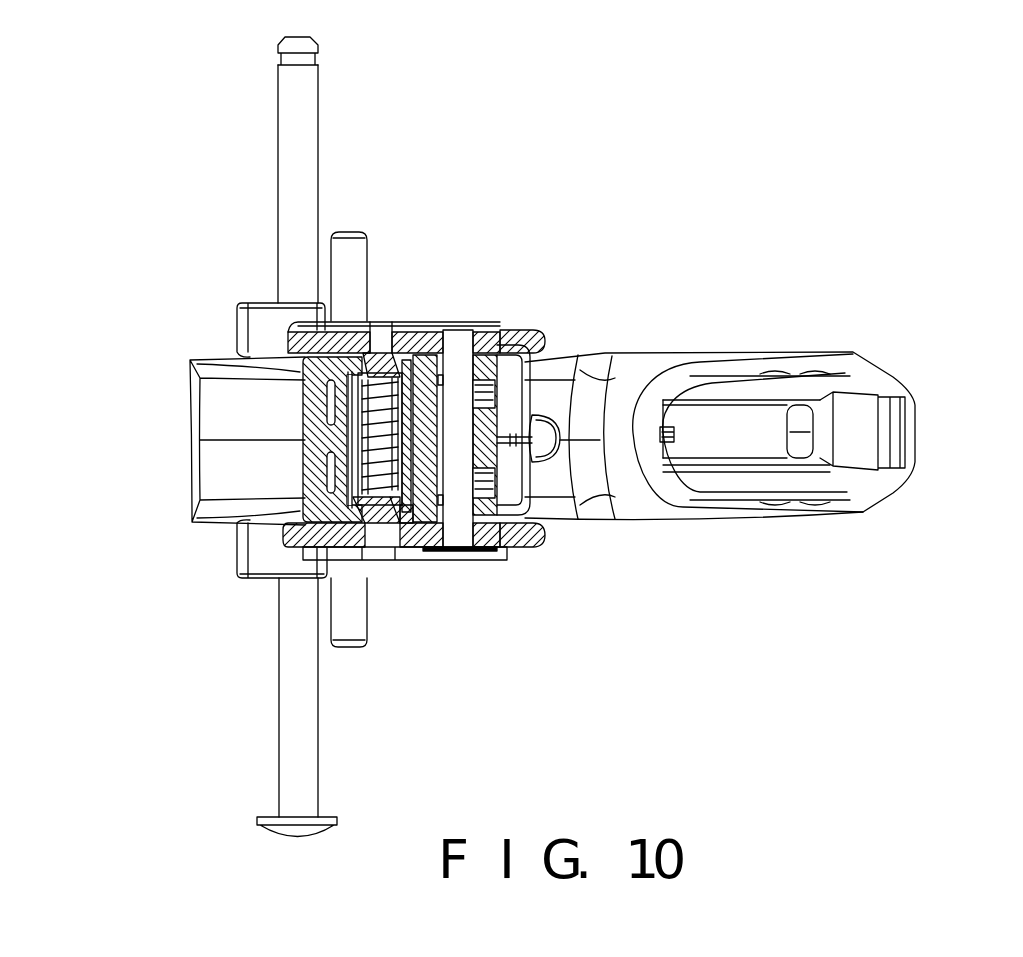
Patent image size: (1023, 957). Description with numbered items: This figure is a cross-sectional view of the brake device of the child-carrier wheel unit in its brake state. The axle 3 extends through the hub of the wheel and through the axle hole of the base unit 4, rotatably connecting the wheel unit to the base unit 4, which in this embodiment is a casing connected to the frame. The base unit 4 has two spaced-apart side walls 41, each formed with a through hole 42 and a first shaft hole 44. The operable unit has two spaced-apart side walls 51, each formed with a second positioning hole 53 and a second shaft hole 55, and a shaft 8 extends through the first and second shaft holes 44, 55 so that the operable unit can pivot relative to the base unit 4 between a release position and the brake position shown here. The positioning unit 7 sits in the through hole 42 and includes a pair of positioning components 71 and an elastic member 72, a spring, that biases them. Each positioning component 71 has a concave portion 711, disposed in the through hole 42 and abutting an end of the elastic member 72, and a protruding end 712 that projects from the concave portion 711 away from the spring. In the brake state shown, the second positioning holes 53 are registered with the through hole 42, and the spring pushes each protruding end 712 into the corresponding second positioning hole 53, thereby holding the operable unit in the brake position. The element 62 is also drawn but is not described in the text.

The axle 3 is at (295, 690).
The base unit 4 is at (938, 410).
The positioning unit 7 is at (343, 439).
The shaft 8 is at (458, 378).
The side wall 41 is at (220, 364).
The through hole 42 is at (355, 527).
The first shaft hole 44 is at (503, 324).
The side wall 51 is at (522, 342).
The second positioning hole 53 is at (376, 548).
The second shaft hole 55 is at (452, 338).
The short pin 62 is at (350, 612).
The positioning component 71 is at (340, 377).
The elastic member 72 is at (372, 378).
The concave portion 711 is at (443, 530).
The protruding end 712 is at (384, 534).